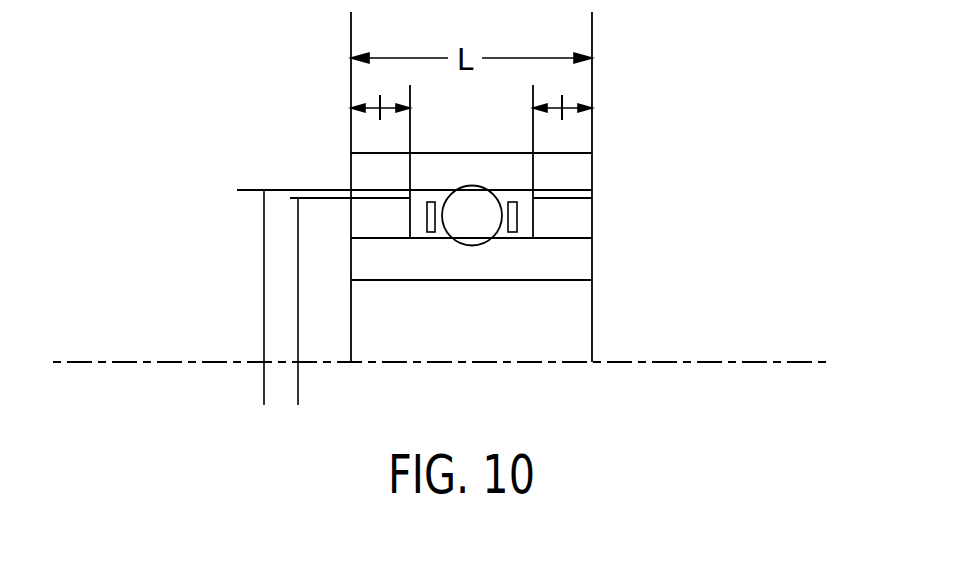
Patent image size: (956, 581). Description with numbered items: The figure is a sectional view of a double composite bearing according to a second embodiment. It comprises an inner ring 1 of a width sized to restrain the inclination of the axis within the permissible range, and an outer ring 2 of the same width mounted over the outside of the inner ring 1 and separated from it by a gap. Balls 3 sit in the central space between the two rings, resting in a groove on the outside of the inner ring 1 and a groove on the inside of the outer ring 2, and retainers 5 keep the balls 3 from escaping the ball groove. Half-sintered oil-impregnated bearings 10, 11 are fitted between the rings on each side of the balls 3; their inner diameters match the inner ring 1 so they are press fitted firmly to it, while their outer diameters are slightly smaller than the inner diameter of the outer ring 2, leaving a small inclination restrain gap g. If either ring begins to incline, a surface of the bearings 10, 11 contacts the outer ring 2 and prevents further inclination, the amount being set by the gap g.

The inner ring 1 is at (575, 263).
The outer ring 2 is at (580, 168).
The balls 3 is at (467, 238).
The retainers 5 is at (511, 229).
The half-sintered oil-impregnated bearing 10 is at (365, 213).
The half-sintered oil-impregnated bearing 11 is at (580, 213).
The inclination restrain gap g is at (327, 192).